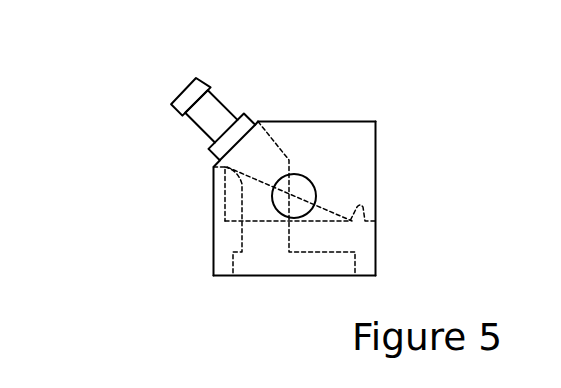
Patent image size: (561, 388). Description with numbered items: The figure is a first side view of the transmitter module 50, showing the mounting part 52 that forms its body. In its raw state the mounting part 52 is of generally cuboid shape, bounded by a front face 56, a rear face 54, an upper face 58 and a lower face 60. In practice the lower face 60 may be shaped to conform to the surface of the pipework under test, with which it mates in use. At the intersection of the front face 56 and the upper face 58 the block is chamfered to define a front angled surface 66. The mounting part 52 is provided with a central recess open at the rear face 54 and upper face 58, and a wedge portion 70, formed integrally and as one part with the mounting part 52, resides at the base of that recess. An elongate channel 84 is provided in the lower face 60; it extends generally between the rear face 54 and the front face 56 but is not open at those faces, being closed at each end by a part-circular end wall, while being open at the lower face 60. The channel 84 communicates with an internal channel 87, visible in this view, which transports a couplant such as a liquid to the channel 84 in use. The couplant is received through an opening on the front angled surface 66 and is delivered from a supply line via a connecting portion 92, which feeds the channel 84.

The connector assembly 50 is at (408, 135).
The mounting part 52 is at (368, 229).
The rear face 54 is at (381, 203).
The front face 56 is at (207, 212).
The upper face 58 is at (340, 121).
The lower face 60 is at (238, 276).
The front angled surface 66 is at (217, 162).
The wedge portion 70 is at (252, 222).
The elongate channel 84 is at (295, 262).
The internal channel 87 is at (268, 167).
The connecting portion 92 is at (205, 112).